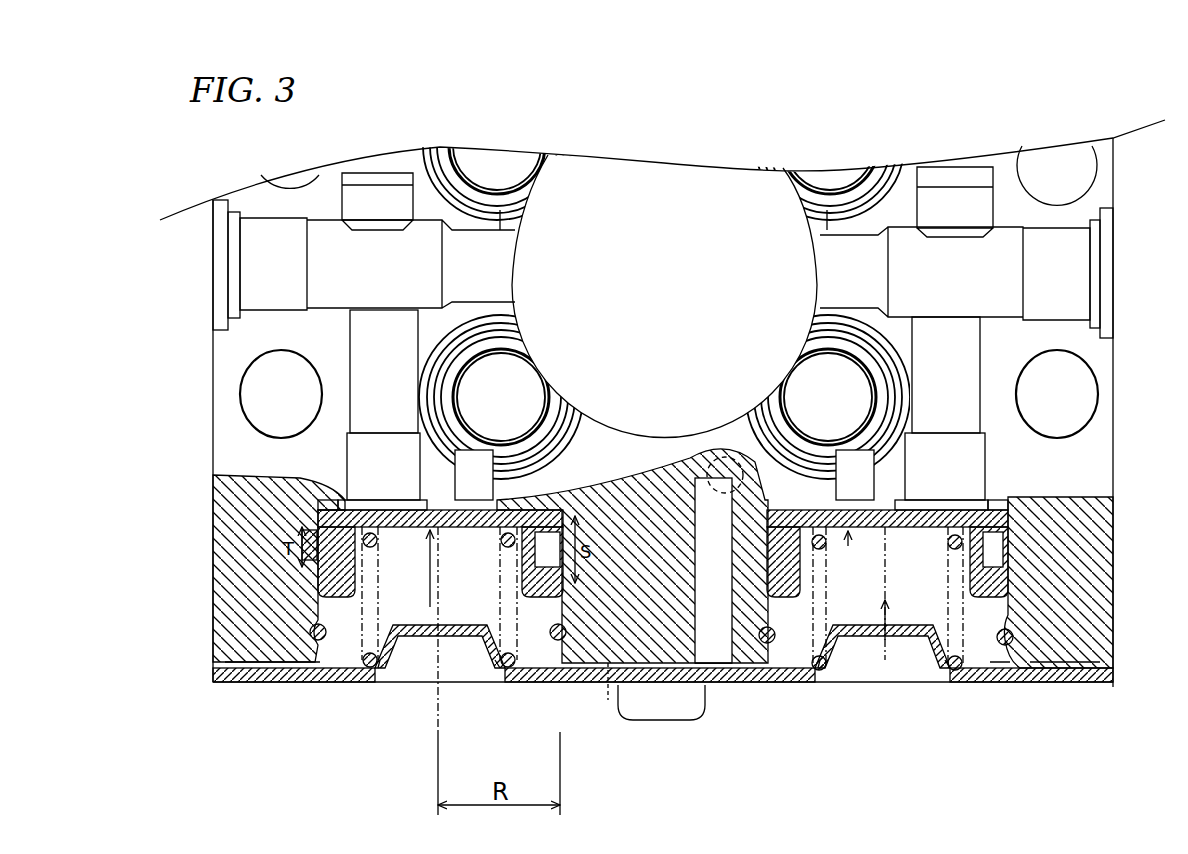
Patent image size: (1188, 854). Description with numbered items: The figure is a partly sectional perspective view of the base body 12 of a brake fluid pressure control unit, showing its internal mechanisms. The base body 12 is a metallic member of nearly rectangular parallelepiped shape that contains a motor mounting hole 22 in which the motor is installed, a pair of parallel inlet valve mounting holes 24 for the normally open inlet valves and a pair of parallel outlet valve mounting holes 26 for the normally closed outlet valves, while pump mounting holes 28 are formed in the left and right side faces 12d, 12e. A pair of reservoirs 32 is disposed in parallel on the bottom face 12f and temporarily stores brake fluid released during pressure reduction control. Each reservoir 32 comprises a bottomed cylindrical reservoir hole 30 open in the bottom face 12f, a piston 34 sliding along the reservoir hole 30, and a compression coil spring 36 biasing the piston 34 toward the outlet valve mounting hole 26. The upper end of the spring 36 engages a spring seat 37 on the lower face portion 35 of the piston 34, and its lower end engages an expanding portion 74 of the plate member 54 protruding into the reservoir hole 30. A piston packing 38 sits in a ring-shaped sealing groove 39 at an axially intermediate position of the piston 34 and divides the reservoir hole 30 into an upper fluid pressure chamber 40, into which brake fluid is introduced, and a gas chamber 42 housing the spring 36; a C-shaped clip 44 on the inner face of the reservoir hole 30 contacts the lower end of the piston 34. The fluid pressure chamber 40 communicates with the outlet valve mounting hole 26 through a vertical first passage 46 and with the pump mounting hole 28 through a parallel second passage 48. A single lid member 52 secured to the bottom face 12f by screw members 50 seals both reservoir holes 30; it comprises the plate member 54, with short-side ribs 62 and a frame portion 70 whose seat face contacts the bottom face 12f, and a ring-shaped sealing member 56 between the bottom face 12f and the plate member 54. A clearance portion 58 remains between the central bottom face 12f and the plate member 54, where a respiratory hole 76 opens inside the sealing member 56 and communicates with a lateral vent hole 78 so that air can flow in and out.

The base body 12 is at (1113, 360).
The left side face 12d is at (213, 362).
The right side face 12e is at (1113, 190).
The bottom face 12f is at (238, 683).
The motor mounting hole 22 is at (642, 437).
The inlet valve mounting hole 24 is at (518, 180).
The outlet valve mounting hole 26 is at (520, 368).
The pump mounting hole 28 is at (263, 310).
The reservoir hole 30 is at (316, 668).
The reservoir 32 is at (423, 660).
The piston 34 is at (397, 682).
The lower face portion 35 is at (400, 528).
The spring 36 is at (503, 682).
The spring seat 37 is at (500, 541).
The piston packing 38 is at (322, 552).
The sealing groove 39 is at (1000, 556).
The fluid pressure chamber 40 is at (480, 497).
The gas chamber 42 is at (453, 660).
The C-shaped clip 44 is at (312, 630).
The first passage 46 is at (460, 475).
The second passage 48 is at (358, 350).
The screw member 50 is at (660, 720).
The lid member 52 is at (526, 688).
The plate member 54 is at (1000, 690).
The sealing member 56 is at (290, 683).
The clearance portion 58 is at (633, 718).
The short-side rib 62 is at (220, 675).
The frame portion 70 is at (612, 698).
The expanding portion 74 is at (478, 615).
The respiratory hole 76 is at (712, 668).
The vent hole 78 is at (716, 478).